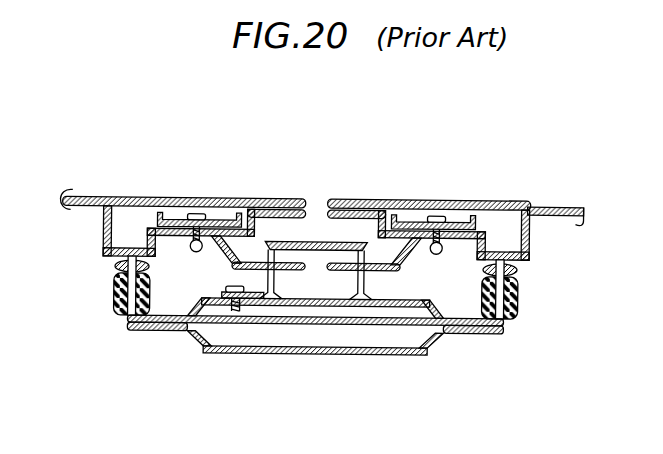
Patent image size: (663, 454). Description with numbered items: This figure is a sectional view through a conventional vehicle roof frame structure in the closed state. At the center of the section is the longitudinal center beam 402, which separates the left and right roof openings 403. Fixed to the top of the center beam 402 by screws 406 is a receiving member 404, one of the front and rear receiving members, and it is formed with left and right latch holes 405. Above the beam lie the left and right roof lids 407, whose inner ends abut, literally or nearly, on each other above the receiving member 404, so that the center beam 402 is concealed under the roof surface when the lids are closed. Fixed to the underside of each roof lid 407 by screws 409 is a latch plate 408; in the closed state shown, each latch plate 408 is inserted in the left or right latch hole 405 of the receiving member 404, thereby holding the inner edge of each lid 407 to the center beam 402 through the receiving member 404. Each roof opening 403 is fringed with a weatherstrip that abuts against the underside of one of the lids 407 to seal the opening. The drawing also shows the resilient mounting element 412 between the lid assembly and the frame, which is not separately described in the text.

The longitudinal center beam 402 is at (191, 350).
The roof opening 403 is at (92, 332).
The receiving member 404 is at (318, 241).
The latch hole 405 is at (253, 209).
The screw 406 is at (226, 288).
The roof lid 407 is at (88, 196).
The latch plate 408 is at (285, 270).
The screw 409 is at (190, 247).
The rubber grommet 412 is at (117, 265).